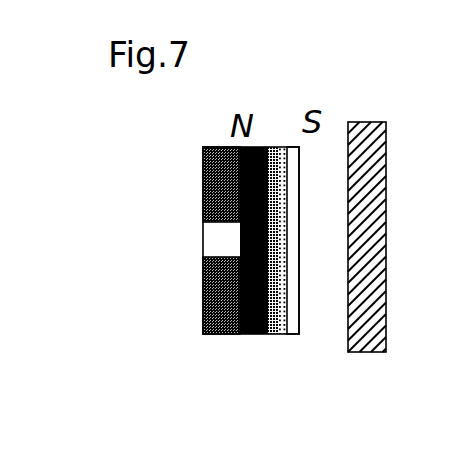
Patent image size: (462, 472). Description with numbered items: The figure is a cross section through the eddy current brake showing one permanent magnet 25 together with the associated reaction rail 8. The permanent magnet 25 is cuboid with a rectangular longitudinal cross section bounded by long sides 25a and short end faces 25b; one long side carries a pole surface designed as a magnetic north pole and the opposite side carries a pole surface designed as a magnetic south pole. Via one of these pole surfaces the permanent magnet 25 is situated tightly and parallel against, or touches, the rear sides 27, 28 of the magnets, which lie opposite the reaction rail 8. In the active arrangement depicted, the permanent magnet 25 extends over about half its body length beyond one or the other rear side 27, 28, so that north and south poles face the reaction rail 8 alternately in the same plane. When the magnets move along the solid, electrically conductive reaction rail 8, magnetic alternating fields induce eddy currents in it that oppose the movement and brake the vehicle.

The reaction rail 8 is at (380, 218).
The permanent magnet 25 is at (260, 231).
The long side 25a is at (299, 302).
The short end face 25b is at (270, 334).
The rear side of magnet 27 is at (226, 169).
The rear side of magnet 28 is at (205, 285).